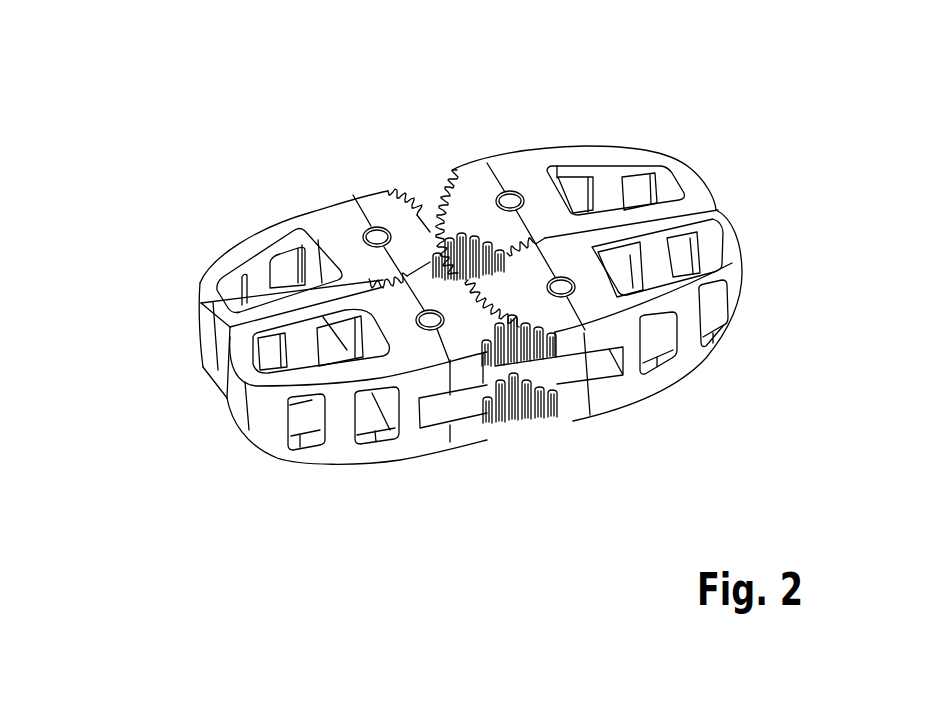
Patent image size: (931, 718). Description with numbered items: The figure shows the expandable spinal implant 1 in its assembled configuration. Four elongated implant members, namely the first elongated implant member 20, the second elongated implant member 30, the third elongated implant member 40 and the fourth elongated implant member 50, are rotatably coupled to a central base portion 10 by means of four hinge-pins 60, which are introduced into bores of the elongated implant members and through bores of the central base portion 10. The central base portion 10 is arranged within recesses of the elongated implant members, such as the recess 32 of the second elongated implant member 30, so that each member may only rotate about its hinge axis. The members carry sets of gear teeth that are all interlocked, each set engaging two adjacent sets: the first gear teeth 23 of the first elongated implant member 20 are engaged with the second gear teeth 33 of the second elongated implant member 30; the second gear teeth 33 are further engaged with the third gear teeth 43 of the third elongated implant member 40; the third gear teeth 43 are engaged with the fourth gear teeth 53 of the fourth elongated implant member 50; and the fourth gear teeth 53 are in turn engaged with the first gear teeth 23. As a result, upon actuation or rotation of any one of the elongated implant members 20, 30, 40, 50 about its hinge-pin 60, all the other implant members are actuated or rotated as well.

The expandable spinal implant 1 is at (136, 89).
The central base portion 10 is at (544, 394).
The first elongated implant member 20 is at (257, 232).
The first gear teeth 23 is at (417, 188).
The second elongated implant member 30 is at (337, 467).
The recess 32 is at (442, 420).
The second gear teeth 33 is at (502, 420).
The third elongated implant member 40 is at (697, 368).
The third gear teeth 43 is at (543, 420).
The fourth elongated implant member 50 is at (597, 146).
The fourth gear teeth 53 is at (458, 205).
The hinge-pins 60 is at (371, 228).